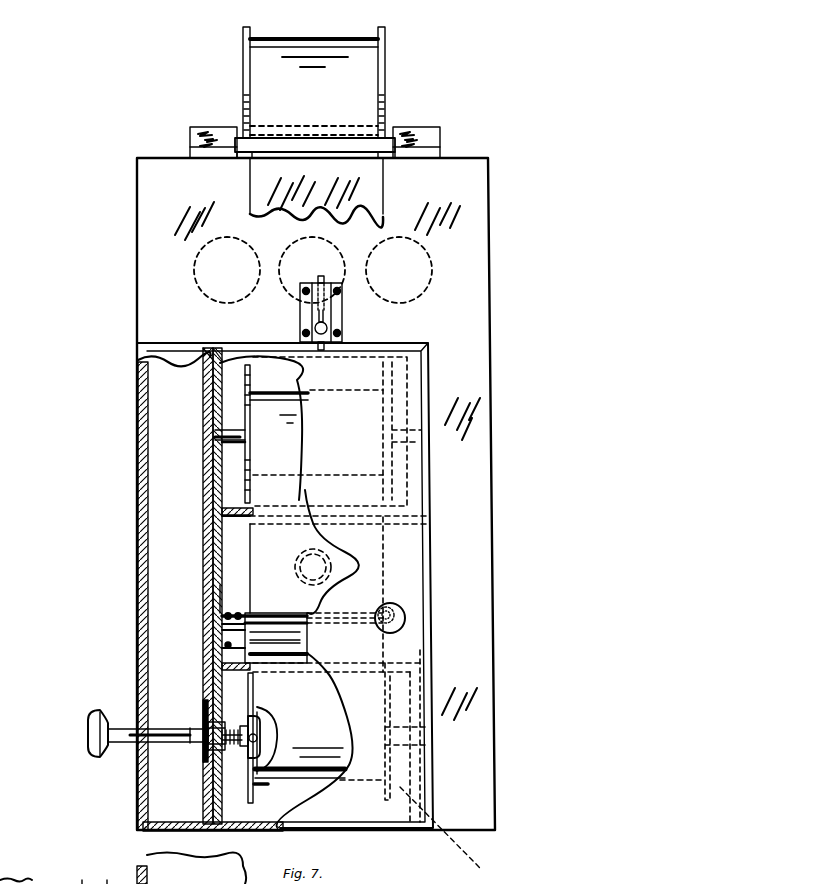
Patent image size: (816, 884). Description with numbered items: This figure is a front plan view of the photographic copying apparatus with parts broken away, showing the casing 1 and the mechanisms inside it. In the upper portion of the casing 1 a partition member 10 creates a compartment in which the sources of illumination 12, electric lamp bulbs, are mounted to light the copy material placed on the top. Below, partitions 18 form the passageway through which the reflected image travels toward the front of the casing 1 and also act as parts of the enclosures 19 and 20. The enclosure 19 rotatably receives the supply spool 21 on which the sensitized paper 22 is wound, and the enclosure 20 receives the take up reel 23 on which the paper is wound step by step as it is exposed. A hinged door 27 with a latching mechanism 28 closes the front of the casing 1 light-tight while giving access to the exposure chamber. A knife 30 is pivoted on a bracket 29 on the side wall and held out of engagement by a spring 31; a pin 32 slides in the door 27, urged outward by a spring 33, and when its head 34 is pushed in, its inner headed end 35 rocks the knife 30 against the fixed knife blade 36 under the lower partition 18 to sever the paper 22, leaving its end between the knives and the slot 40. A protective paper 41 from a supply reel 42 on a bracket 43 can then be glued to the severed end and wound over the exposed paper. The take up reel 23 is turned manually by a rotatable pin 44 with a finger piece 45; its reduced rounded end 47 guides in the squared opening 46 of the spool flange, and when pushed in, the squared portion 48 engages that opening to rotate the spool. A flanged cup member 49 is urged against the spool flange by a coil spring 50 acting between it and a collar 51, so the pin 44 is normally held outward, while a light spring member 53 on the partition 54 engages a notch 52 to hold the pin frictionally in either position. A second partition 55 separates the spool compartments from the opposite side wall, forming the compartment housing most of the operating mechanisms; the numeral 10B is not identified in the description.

The casing 1 is at (473, 470).
The partition member 10 is at (358, 357).
The chamber opening 10B is at (277, 528).
The sources of illumination 12 is at (227, 285).
The partitions 18 is at (393, 512).
The enclosure 19 is at (235, 476).
The enclosure 20 is at (273, 812).
The supply spool 21 is at (245, 375).
The sensitized paper 22 is at (272, 542).
The take up reel 23 is at (262, 787).
The hinged door 27 is at (357, 440).
The latching mechanism 28 is at (342, 320).
The bracket 29 is at (220, 585).
The knife 30 is at (285, 614).
The spring 31 is at (307, 620).
The pin 32 is at (375, 625).
The spring 33 is at (400, 605).
The head 34 is at (400, 620).
The inner headed end 35 is at (258, 638).
The fixed knife blade 36 is at (245, 612).
The slot 40 is at (244, 735).
The protective paper 41 is at (262, 162).
The supply reel 42 is at (386, 63).
The bracket 43 is at (390, 138).
The rotatable pin 44 is at (138, 735).
The finger piece 45 is at (90, 725).
The squared opening 46 is at (262, 735).
The reduced rounded end 47 is at (256, 740).
The squared portion 48 is at (107, 883).
The flanged cup member 49 is at (82, 883).
The coil spring 50 is at (228, 722).
The collar 51 is at (205, 720).
The notch 52 is at (190, 730).
The light spring member 53 is at (207, 750).
The partition 54 is at (205, 672).
The second partition 55 is at (449, 834).